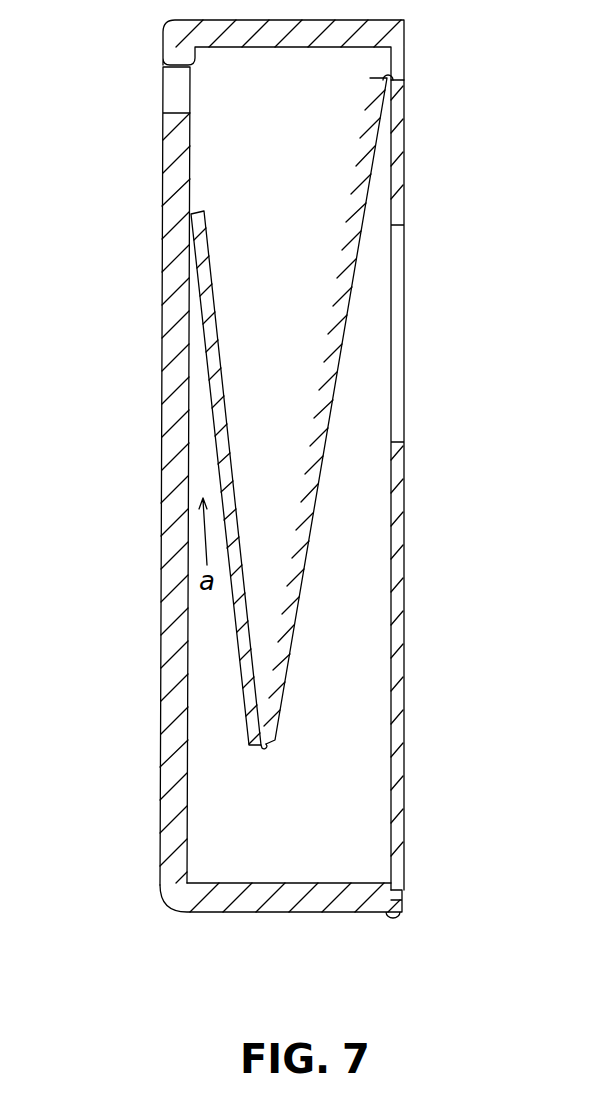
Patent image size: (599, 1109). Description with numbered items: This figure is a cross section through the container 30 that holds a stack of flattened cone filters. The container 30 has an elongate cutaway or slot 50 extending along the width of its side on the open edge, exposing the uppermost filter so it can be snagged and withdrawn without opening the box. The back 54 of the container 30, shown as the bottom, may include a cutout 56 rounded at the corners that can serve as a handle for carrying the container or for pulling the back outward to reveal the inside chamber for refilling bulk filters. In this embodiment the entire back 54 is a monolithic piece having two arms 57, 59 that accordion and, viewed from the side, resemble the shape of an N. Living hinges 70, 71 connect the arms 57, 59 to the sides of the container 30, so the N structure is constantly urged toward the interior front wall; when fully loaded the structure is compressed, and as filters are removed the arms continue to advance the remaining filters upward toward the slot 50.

The container 30 is at (160, 826).
The slot 50 is at (165, 59).
The back 54 is at (403, 800).
The cutout 56 is at (404, 283).
The arm 57 is at (313, 531).
The arm 59 is at (238, 675).
The living hinge 70 is at (392, 75).
The living hinge 71 is at (265, 752).